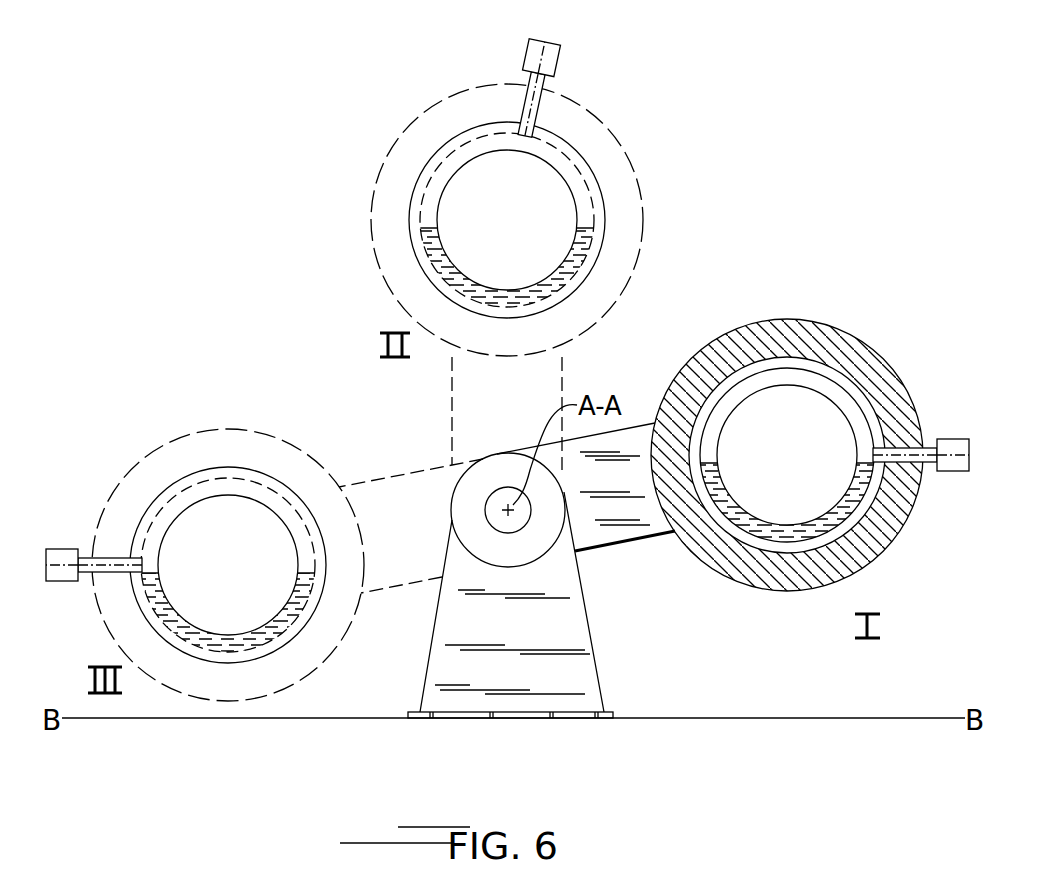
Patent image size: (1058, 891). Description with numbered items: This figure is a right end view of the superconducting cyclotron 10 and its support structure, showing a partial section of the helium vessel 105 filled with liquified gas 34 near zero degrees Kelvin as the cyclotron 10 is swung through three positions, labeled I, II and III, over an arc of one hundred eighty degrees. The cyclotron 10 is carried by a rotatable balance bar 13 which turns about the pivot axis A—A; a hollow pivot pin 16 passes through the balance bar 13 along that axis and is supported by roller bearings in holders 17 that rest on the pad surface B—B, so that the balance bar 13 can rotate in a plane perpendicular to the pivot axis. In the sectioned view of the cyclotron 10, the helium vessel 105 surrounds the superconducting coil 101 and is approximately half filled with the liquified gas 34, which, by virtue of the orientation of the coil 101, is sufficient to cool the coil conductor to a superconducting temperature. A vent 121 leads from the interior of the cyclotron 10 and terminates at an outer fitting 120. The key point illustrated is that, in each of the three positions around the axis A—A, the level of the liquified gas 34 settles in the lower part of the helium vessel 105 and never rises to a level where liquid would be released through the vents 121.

The superconducting cyclotron 10 is at (396, 96).
The balance bar 13 is at (542, 385).
The hollow pivot pin 16 is at (497, 497).
The holders 17 is at (567, 682).
The liquified gas 34 is at (574, 245).
The superconducting coil 101 is at (577, 203).
The helium vessel 105 is at (580, 165).
The drive unit 120 is at (537, 52).
The vents 121 is at (538, 100).